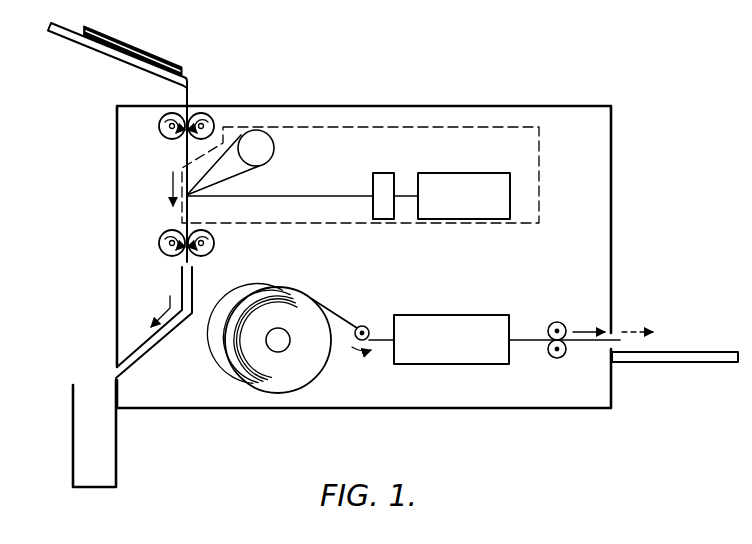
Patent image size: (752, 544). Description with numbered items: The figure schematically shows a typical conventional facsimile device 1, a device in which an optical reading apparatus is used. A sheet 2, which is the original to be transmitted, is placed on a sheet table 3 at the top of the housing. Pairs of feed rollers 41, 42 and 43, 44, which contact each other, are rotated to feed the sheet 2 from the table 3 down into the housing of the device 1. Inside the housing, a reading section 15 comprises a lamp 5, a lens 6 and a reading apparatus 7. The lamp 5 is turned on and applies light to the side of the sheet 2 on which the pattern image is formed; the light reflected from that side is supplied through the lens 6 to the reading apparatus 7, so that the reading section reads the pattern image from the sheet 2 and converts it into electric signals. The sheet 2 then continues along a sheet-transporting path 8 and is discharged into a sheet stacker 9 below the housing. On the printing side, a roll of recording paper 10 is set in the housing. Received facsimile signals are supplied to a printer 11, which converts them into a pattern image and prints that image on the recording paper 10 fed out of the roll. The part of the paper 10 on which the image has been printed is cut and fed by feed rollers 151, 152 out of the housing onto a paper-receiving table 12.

The facsimile device 1 is at (612, 180).
The sheet 2 is at (141, 52).
The sheet table 3 is at (75, 43).
The feed roller 41 is at (207, 116).
The feed roller 42 is at (162, 134).
The feed roller 43 is at (162, 251).
The feed roller 44 is at (211, 251).
The lamp 5 is at (273, 153).
The lens 6 is at (382, 175).
The reading apparatus 7 is at (462, 181).
The sheet-transporting path 8 is at (158, 346).
The sheet stacker 9 is at (96, 488).
The roll of recording paper 10 is at (283, 290).
The printer 11 is at (450, 326).
The paper-receiving table 12 is at (690, 363).
The feed rollers 15 is at (333, 226).
The feed roller 151 is at (557, 321).
The feed roller 152 is at (557, 359).